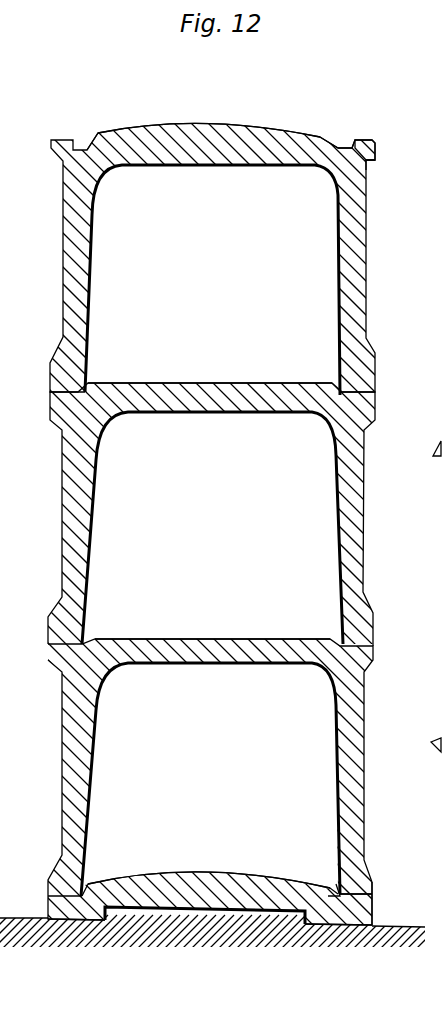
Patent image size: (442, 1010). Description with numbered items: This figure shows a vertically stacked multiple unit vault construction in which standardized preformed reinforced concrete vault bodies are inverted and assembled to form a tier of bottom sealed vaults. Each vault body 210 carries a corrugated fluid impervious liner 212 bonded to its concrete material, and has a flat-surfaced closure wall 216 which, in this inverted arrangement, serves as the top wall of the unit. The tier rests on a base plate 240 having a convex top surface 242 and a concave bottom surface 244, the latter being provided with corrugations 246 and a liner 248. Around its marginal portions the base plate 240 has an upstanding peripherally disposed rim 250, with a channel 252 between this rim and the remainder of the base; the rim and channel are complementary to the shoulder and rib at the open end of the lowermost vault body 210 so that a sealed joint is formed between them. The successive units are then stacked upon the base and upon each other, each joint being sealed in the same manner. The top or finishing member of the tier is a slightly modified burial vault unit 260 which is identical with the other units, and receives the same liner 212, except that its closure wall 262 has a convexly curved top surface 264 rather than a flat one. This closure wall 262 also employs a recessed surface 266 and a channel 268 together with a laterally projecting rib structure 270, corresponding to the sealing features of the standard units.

The vault body 210 is at (221, 505).
The fluid impervious liner 212 is at (90, 279).
The closure wall 216 is at (186, 398).
The base plate 240 is at (208, 883).
The convex top surface 242 is at (142, 878).
The concave bottom surface 244 is at (262, 912).
The corrugations 246 is at (175, 912).
The liner 248 is at (124, 913).
The rim 250 is at (372, 893).
The channel 252 is at (338, 902).
The burial vault unit 260 is at (221, 505).
The closure wall 262 is at (246, 127).
The convexly curved top surface 264 is at (181, 128).
The recessed surface 266 is at (371, 142).
The channel 268 is at (345, 147).
The rib structure 270 is at (372, 159).